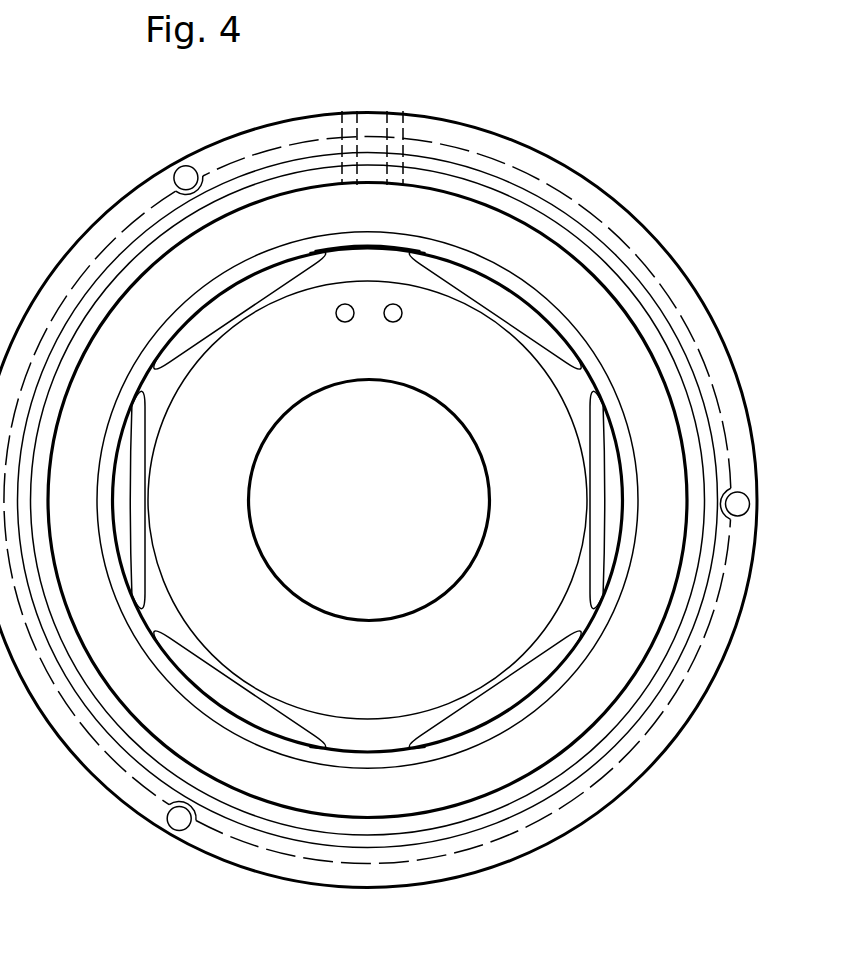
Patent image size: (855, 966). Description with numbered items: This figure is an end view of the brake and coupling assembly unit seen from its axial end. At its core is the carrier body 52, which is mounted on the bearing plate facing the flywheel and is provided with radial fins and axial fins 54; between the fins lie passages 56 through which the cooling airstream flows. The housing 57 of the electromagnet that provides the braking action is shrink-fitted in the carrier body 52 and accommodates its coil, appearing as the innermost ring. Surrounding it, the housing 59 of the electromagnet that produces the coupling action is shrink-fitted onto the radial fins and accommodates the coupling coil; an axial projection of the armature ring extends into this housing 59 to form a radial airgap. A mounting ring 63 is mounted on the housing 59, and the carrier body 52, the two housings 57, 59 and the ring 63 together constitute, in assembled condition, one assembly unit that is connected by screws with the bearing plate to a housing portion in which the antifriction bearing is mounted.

The carrier body 52 is at (150, 498).
The axial fins 54 is at (371, 263).
The passage 56 is at (481, 284).
The housing 57 is at (506, 468).
The housing 59 is at (600, 304).
The mounting ring 63 is at (585, 200).